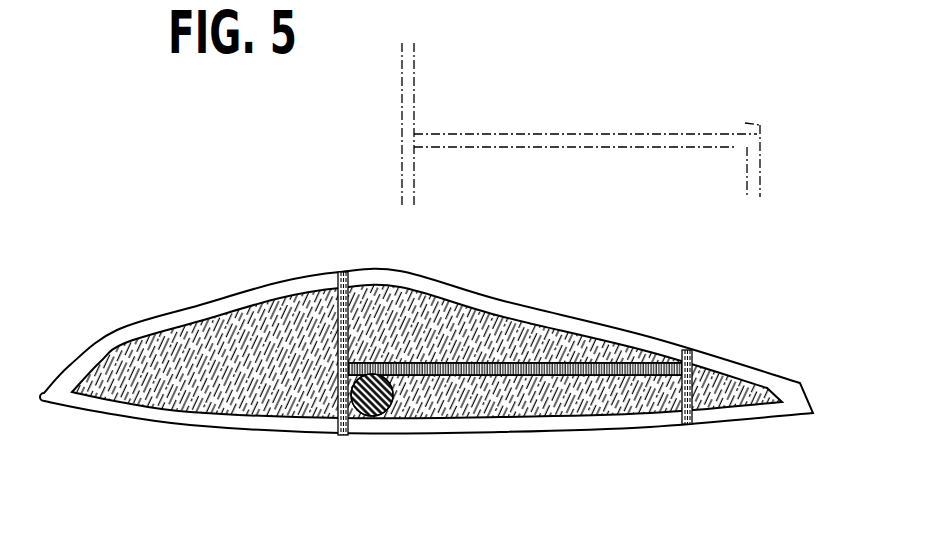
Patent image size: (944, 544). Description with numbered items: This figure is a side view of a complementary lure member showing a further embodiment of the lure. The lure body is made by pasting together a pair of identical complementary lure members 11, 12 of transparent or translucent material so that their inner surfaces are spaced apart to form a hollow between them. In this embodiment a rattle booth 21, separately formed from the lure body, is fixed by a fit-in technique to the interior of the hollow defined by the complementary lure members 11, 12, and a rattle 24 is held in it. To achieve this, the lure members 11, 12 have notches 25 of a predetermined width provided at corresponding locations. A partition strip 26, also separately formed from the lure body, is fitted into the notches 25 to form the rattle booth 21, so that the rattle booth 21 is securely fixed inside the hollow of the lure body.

The rattle booth 21 is at (576, 130).
The complementary lure member 11 is at (529, 301).
The complementary lure member 12 is at (370, 270).
The rattle 24 is at (392, 405).
The notch 25 is at (697, 390).
The partition strip 26 is at (615, 376).